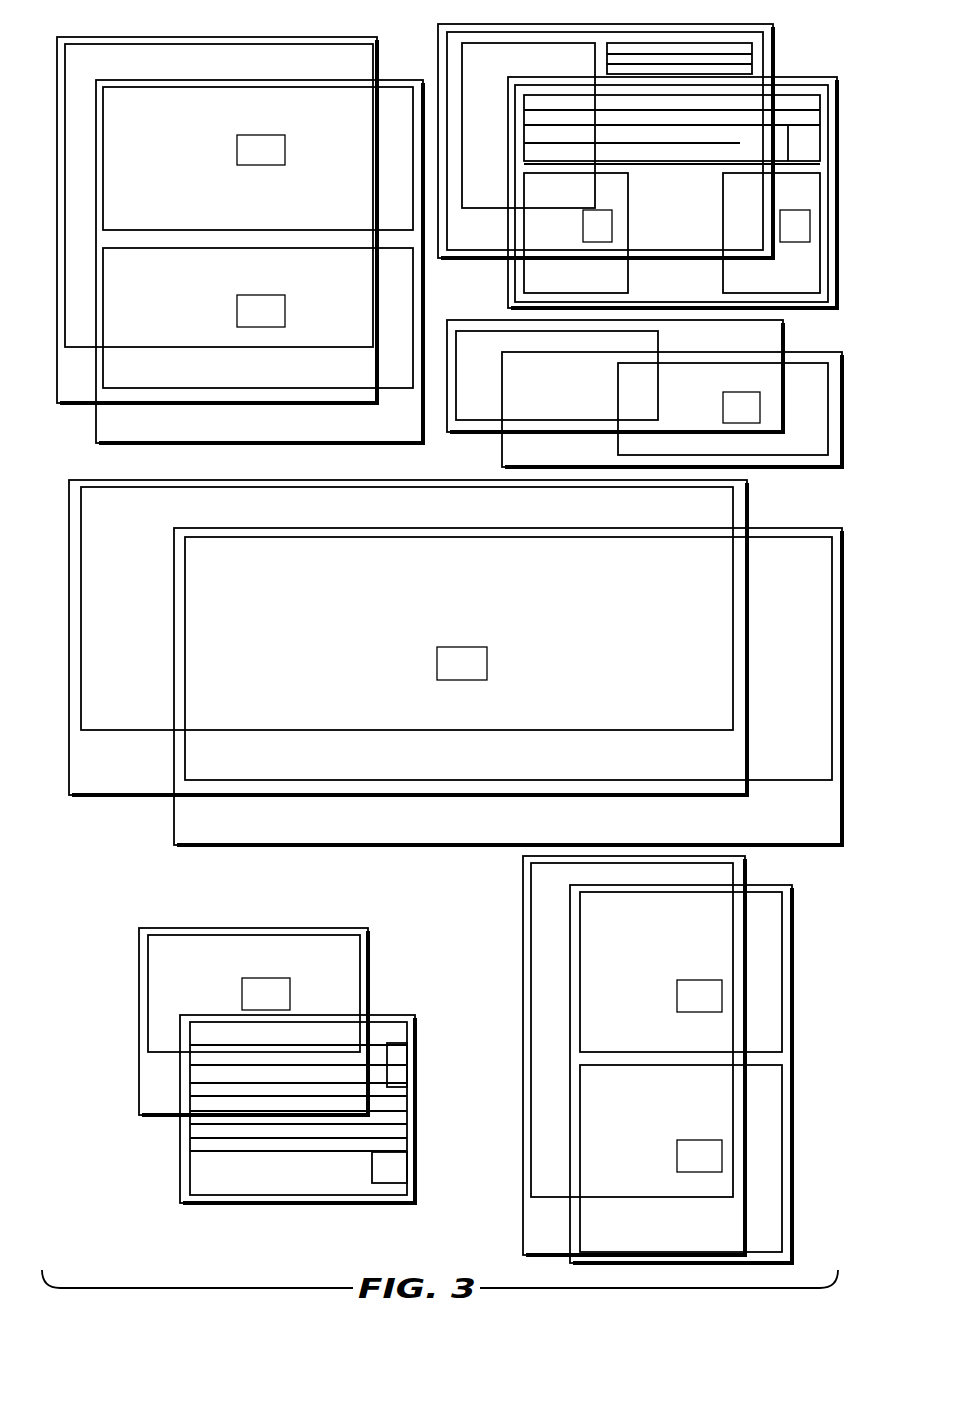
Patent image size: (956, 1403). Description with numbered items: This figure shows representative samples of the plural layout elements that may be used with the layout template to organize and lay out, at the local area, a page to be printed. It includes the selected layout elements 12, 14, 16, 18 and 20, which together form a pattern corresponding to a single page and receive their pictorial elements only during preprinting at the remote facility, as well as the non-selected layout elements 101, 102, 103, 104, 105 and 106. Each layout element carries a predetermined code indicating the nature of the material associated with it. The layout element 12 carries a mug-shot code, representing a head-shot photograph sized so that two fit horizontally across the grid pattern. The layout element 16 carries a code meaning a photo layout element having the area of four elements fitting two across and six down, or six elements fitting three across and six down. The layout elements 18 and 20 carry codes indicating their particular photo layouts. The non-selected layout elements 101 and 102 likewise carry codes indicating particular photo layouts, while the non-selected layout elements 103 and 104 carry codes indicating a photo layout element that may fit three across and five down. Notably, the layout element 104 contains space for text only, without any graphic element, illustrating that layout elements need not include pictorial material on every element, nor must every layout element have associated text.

The layout element 12 is at (768, 48).
The layout element 14 is at (832, 86).
The layout element 16 is at (187, 808).
The layout element 18 is at (67, 382).
The layout element 20 is at (103, 428).
The non-selected layout element 101 is at (745, 866).
The non-selected layout element 102 is at (787, 918).
The non-selected layout element 103 is at (368, 955).
The non-selected layout element 104 is at (415, 1033).
The non-selected layout element 105 is at (783, 320).
The non-selected layout element 106 is at (857, 347).